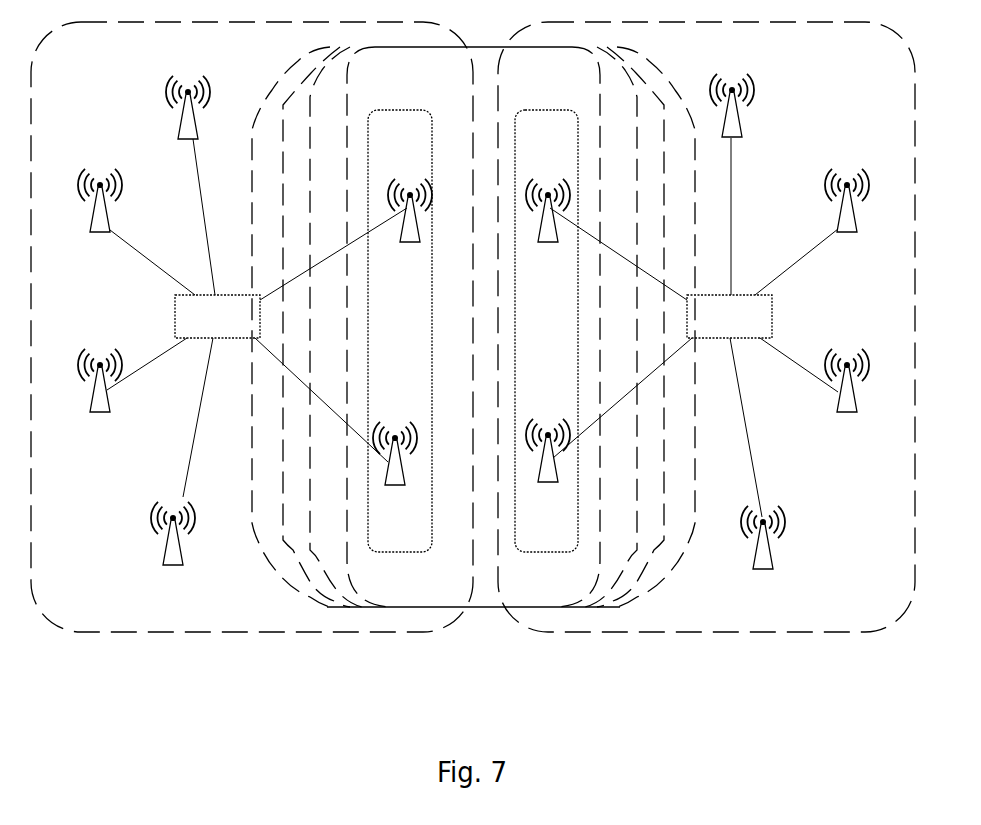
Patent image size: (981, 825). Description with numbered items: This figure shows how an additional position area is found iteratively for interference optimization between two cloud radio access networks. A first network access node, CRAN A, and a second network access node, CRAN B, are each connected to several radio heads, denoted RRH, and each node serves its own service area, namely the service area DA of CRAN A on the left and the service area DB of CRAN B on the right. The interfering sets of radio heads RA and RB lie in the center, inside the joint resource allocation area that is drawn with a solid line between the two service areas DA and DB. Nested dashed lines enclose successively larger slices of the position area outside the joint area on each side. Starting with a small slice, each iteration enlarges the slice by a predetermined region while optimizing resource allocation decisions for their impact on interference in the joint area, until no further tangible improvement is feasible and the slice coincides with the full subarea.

The service area of CRAN A DA is at (252, 327).
The service area of CRAN B DB is at (706, 327).
The set of radio heads of CRAN A RA is at (400, 331).
The set of radio heads of CRAN B RB is at (546, 331).
The first network access node CRAN A is at (217, 316).
The second network access node CRAN B is at (729, 316).
The radio head RRH is at (473, 335).